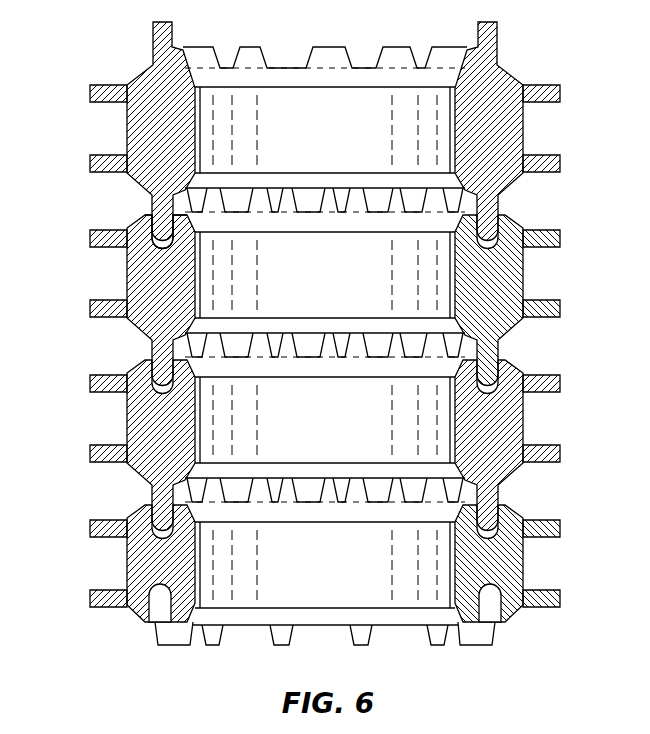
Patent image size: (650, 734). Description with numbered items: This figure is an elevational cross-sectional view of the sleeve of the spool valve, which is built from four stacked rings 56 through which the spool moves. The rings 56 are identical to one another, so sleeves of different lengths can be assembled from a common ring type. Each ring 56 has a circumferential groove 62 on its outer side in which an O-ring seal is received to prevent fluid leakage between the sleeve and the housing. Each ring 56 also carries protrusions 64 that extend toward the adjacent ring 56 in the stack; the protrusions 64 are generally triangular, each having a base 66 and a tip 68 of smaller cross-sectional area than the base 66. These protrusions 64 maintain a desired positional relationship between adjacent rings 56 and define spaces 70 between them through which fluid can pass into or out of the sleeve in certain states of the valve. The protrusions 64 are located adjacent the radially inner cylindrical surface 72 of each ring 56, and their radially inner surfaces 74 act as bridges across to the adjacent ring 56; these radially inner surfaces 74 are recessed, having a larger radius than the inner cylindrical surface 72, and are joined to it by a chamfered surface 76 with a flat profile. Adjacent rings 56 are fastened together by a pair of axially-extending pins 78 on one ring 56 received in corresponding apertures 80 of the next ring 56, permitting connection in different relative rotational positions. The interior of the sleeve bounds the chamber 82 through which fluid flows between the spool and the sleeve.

The ring 56 is at (522, 128).
The circumferential groove 62 is at (543, 104).
The protrusion 64 is at (293, 202).
The base 66 is at (357, 210).
The tip 68 is at (343, 192).
The space 70 is at (307, 342).
The radially inner cylindrical surface 72 is at (211, 393).
The radially inner surface 74 is at (257, 493).
The chamfered surface 76 is at (218, 477).
The axially-extending pin 78 is at (147, 213).
The aperture 80 is at (130, 265).
The chamber 82 is at (285, 588).